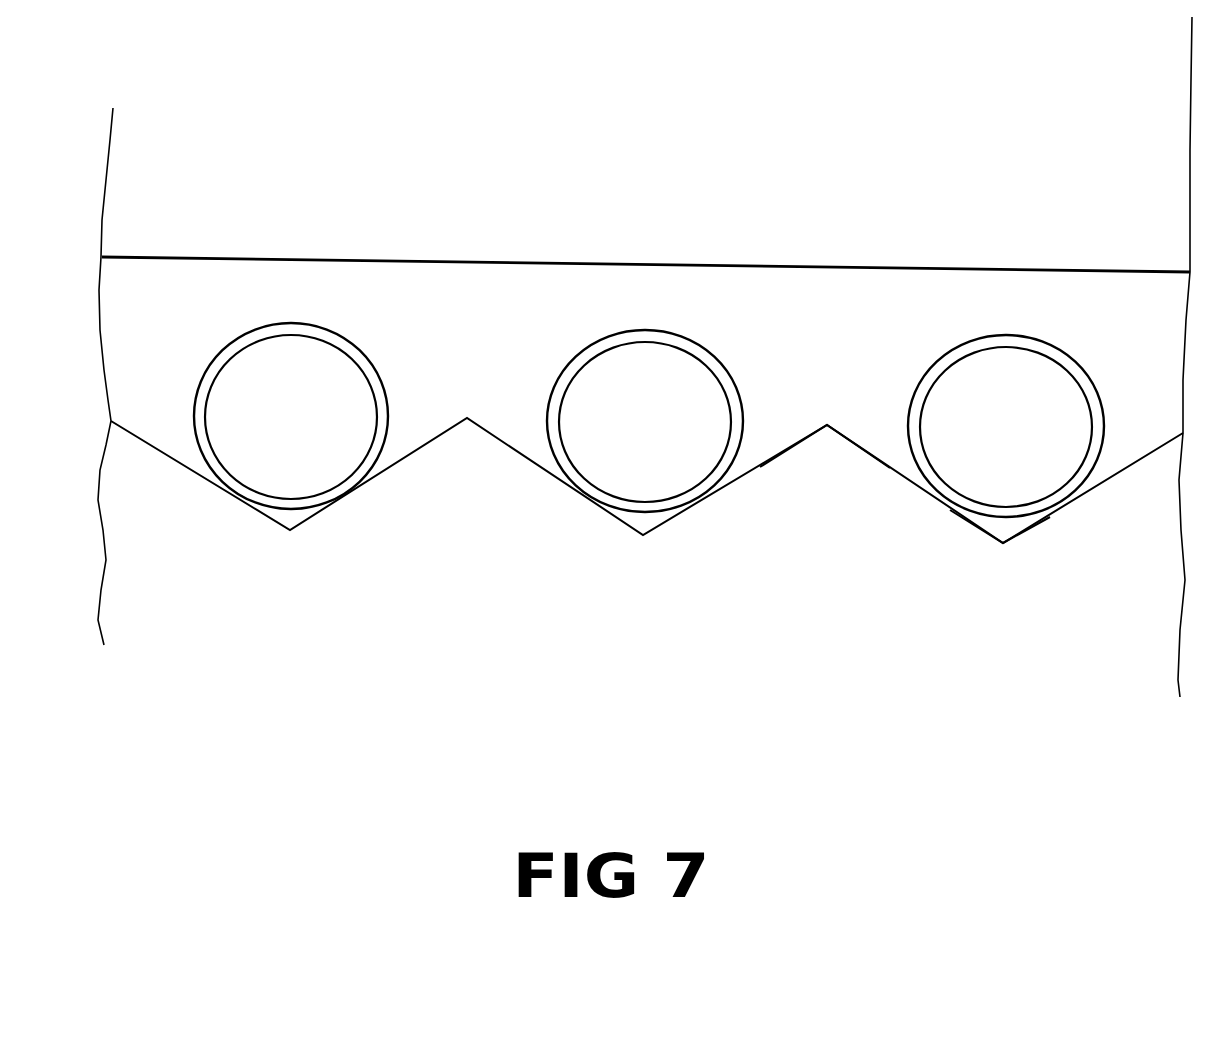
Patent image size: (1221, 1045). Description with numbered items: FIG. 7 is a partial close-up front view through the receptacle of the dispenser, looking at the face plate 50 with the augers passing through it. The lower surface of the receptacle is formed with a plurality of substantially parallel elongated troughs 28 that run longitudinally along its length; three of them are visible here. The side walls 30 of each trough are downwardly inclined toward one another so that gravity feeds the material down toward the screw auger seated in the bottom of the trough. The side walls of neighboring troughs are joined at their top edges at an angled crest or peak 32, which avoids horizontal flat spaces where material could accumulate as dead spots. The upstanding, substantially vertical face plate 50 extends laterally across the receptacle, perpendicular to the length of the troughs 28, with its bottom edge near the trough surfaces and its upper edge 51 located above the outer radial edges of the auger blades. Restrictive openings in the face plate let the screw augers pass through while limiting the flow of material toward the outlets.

The trough 28 is at (997, 527).
The side wall 30 is at (508, 455).
The angled crest or peak 32 is at (827, 427).
The face plate 50 is at (192, 288).
The upper edge 51 is at (387, 257).